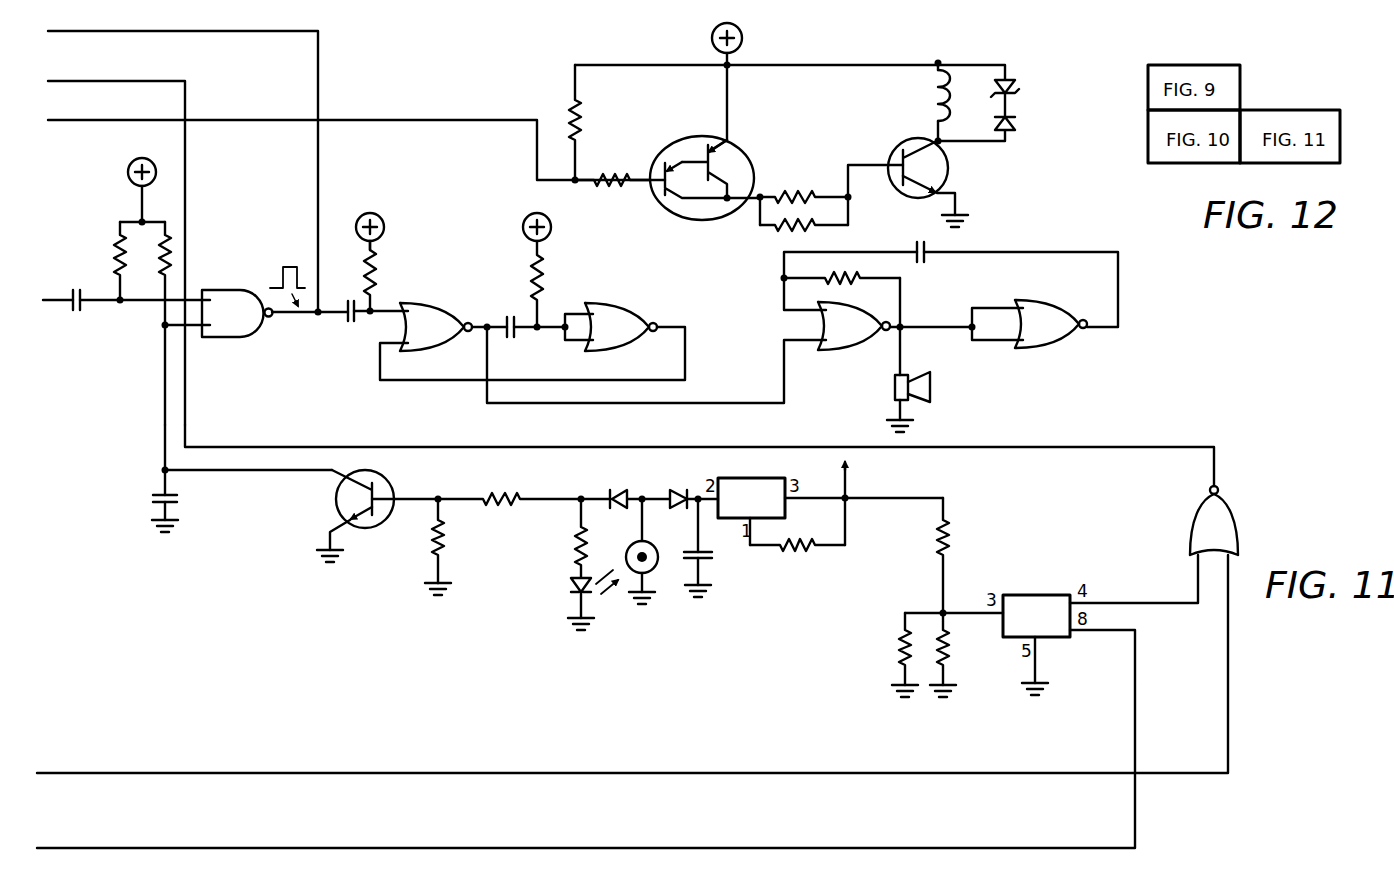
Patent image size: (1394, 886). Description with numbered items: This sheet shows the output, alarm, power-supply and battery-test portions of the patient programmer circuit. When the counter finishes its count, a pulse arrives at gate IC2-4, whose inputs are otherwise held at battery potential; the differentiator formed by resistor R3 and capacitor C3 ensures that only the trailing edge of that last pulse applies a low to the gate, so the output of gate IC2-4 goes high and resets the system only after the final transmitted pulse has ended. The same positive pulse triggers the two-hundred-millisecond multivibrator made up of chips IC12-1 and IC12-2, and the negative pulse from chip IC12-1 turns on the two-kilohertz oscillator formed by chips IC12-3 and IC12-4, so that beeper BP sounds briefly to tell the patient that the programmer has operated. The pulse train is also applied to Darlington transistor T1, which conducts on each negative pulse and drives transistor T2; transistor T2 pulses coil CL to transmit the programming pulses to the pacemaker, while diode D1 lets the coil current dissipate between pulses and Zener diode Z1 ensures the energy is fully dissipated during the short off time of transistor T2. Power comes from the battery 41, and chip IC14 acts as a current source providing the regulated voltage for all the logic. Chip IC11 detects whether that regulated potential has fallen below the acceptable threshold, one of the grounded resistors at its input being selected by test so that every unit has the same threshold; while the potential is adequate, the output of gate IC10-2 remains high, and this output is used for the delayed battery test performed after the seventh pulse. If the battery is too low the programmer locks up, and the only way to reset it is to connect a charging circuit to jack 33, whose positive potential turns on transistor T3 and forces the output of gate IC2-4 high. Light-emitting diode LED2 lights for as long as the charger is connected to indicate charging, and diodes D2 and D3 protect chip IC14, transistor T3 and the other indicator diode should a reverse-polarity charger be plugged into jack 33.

In FIG. 12, the differentiator resistor R3 is at (115, 248).
In FIG. 12, the differentiator capacitor C3 is at (78, 323).
In FIG. 12, the gate IC2-4 is at (248, 264).
In FIG. 12, the multivibrator chip IC12-1 is at (458, 292).
In FIG. 12, the multivibrator chip IC12-2 is at (650, 292).
In FIG. 12, the oscillator chip IC12-3 is at (866, 364).
In FIG. 12, the oscillator chip IC12-4 is at (1090, 364).
In FIG. 12, the Darlington transistor T1 is at (776, 146).
In FIG. 12, the transistor T2 is at (950, 166).
In FIG. 12, the coil CL is at (935, 102).
In FIG. 12, the Zener diode Z1 is at (1014, 92).
In FIG. 12, the diode D1 is at (1016, 124).
In FIG. 12, the beeper BP is at (920, 406).
In FIG. 11, the transistor T3 is at (337, 505).
In FIG. 11, the diode D3 is at (619, 474).
In FIG. 11, the diode D2 is at (678, 490).
In FIG. 11, the jack 33 is at (660, 558).
In FIG. 11, the light-emitting diode LED2 is at (594, 598).
In FIG. 11, the battery 41 is at (713, 558).
In FIG. 11, the current source chip IC14 is at (751, 498).
In FIG. 11, the battery detector chip IC11 is at (1036, 616).
In FIG. 11, the gate IC10-2 is at (1197, 526).